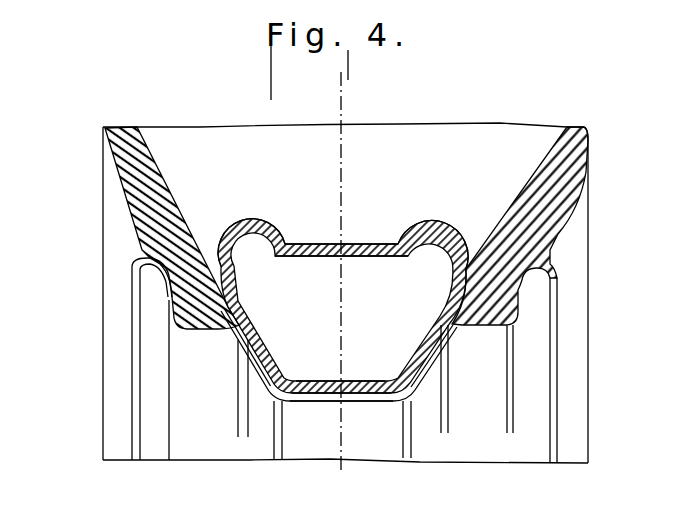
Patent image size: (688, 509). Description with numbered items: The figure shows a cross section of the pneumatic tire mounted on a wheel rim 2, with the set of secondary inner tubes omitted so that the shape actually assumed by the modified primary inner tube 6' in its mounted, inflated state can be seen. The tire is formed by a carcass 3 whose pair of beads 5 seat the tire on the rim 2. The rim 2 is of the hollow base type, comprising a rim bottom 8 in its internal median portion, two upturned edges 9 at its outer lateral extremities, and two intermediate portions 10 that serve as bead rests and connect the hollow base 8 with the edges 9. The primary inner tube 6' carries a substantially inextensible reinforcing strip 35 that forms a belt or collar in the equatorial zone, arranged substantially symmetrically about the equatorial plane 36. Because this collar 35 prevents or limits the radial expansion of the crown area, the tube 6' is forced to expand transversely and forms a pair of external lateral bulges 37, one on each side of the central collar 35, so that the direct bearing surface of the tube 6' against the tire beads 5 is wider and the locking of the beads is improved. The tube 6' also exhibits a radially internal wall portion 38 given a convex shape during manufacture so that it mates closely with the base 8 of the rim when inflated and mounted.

The wheel rim 2 is at (164, 418).
The carcass 3 is at (132, 180).
The beads 5 is at (229, 313).
The primary inner tube 6' is at (339, 355).
The rim bottom 8 is at (332, 398).
The upturned edges 9 is at (131, 265).
The intermediate portions 10 is at (222, 333).
The strip 35 is at (372, 242).
The equatorial plane 36 is at (343, 122).
The external lateral bulges 37 is at (263, 221).
The radially internal wall portion 38 is at (316, 380).